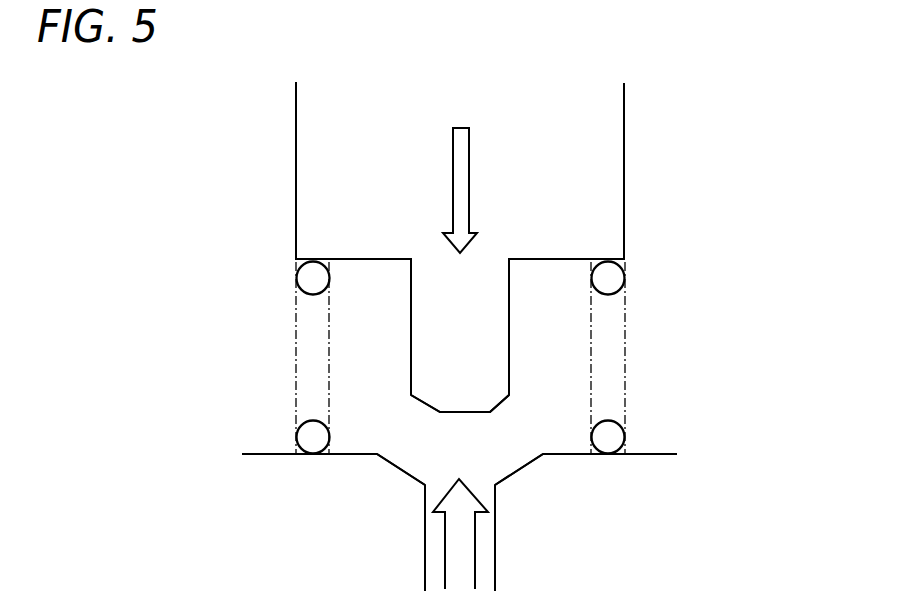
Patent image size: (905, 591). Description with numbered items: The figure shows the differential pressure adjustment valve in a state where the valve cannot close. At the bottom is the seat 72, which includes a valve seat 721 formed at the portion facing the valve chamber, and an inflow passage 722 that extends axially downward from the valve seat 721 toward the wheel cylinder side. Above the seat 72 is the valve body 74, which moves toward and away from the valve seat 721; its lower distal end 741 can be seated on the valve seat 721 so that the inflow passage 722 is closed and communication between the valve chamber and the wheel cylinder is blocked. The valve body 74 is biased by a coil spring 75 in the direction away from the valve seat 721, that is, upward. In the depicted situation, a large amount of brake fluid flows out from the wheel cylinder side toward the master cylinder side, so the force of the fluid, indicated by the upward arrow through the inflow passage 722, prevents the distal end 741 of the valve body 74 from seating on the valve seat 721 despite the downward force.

The valve body 74 is at (602, 162).
The distal end 741 is at (492, 405).
The coil spring 75 is at (625, 272).
The seat 72 is at (730, 453).
The valve seat 721 is at (393, 463).
The inflow passage 722 is at (494, 527).